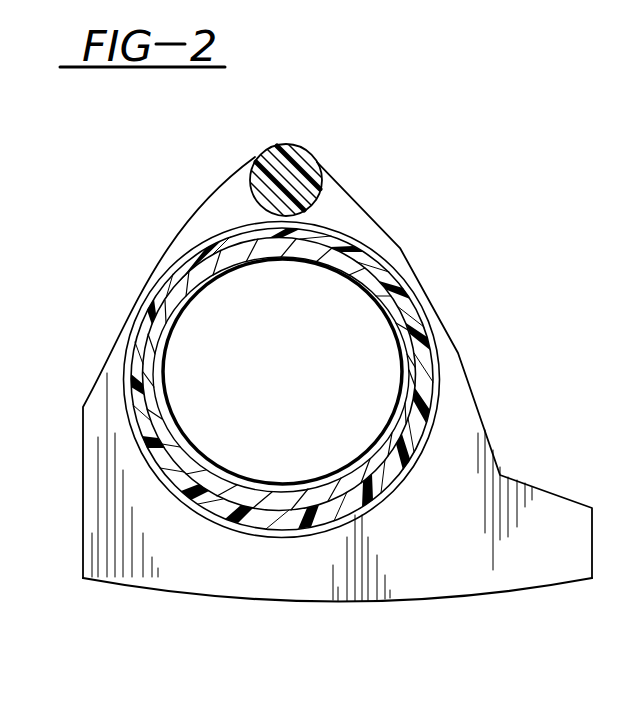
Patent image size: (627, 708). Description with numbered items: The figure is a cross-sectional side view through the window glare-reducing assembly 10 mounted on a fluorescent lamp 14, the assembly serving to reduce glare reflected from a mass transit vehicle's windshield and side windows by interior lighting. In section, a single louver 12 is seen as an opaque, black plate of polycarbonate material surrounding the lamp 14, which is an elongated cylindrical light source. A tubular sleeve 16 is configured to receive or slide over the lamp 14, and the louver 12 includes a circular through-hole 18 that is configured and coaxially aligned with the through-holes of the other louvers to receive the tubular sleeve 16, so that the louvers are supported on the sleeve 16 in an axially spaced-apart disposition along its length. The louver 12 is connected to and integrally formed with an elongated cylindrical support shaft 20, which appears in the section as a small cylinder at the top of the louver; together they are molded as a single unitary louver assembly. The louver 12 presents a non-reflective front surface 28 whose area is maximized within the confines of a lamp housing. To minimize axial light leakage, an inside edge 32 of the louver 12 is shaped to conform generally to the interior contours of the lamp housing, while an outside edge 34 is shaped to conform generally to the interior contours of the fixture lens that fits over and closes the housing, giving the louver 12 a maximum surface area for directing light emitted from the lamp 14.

The window glare-reducing assembly 10 is at (400, 210).
The louver 12 is at (462, 402).
The fluorescent lamp 14 is at (396, 318).
The tubular sleeve 16 is at (408, 270).
The circular through-hole 18 is at (232, 238).
The elongated cylindrical support shaft 20 is at (307, 152).
The front surface 28 is at (440, 558).
The inside edge 32 is at (180, 230).
The outside edge 34 is at (207, 596).